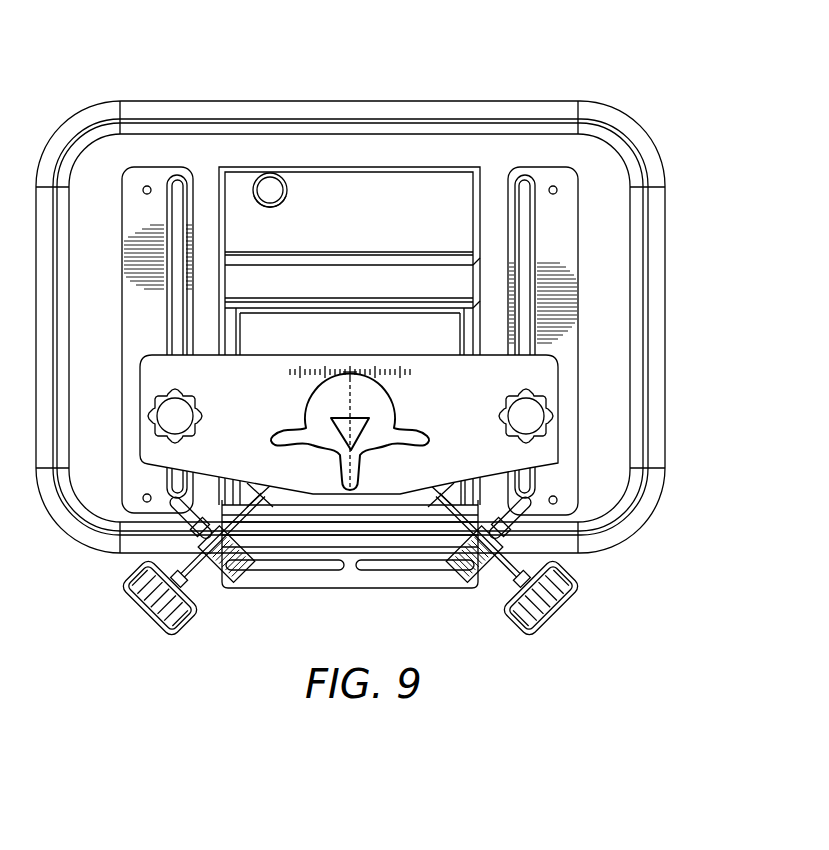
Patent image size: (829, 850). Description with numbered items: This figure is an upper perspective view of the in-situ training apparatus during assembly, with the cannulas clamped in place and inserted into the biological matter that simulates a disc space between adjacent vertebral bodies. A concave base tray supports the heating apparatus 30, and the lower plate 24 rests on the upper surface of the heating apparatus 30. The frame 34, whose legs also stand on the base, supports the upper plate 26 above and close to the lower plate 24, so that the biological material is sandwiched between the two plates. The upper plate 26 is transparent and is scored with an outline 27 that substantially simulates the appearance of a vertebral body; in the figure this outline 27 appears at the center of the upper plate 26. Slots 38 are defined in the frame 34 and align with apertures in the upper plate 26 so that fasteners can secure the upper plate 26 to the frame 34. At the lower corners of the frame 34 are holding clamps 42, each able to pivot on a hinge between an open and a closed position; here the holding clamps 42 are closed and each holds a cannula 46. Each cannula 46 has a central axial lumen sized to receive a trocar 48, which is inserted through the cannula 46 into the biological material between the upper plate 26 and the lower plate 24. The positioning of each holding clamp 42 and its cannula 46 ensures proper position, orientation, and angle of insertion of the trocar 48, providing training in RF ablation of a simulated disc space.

The lower plate 24 is at (264, 325).
The upper plate 26 is at (400, 472).
The outline 27 is at (320, 450).
The heating apparatus 30 is at (387, 197).
The frame 34 is at (566, 288).
The slot 38 is at (525, 233).
The holding clamp 42 is at (193, 525).
The cannula 46 is at (238, 522).
The trocar 48 is at (190, 633).